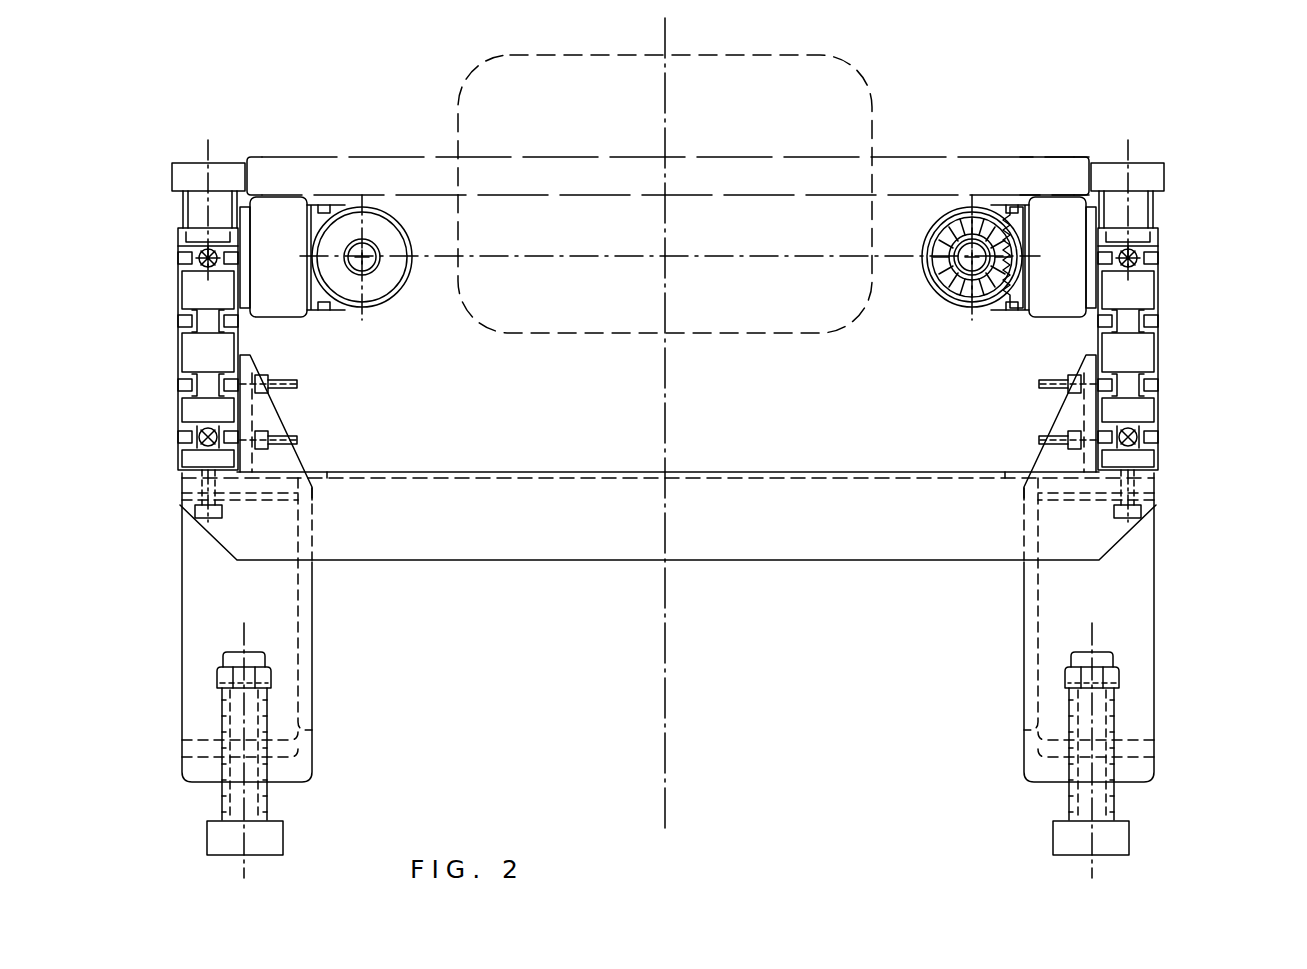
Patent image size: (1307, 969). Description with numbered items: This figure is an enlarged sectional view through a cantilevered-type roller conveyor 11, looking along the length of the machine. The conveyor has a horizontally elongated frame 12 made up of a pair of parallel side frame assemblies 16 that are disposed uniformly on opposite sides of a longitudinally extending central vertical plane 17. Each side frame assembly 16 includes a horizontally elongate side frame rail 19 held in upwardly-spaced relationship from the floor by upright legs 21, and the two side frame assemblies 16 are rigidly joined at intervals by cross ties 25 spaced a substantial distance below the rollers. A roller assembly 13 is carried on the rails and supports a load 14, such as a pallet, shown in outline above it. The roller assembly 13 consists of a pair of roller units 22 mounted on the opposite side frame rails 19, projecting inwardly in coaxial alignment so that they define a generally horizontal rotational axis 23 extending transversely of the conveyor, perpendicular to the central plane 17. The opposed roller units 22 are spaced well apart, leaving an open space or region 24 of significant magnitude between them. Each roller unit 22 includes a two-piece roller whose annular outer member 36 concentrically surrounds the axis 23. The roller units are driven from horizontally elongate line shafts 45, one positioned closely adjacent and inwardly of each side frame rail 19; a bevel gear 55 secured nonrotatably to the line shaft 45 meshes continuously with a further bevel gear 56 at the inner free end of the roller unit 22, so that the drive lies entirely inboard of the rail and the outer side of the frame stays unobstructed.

The roller conveyor 11 is at (1213, 372).
The frame 12 is at (1000, 560).
The roller assembly 13 is at (348, 170).
The load 14 is at (1035, 168).
The side frame assembly 16 is at (181, 574).
The central vertical plane 17 is at (668, 666).
The side frame rail 19 is at (183, 340).
The upright leg 21 is at (290, 637).
The roller unit 22 is at (295, 324).
The rotational axis 23 is at (792, 257).
The open space or region 24 is at (892, 270).
The cross tie 25 is at (838, 553).
The outer member 36 is at (275, 313).
The line shaft 45 is at (368, 268).
The bevel gear 55 is at (947, 215).
The bevel gear 56 is at (996, 210).